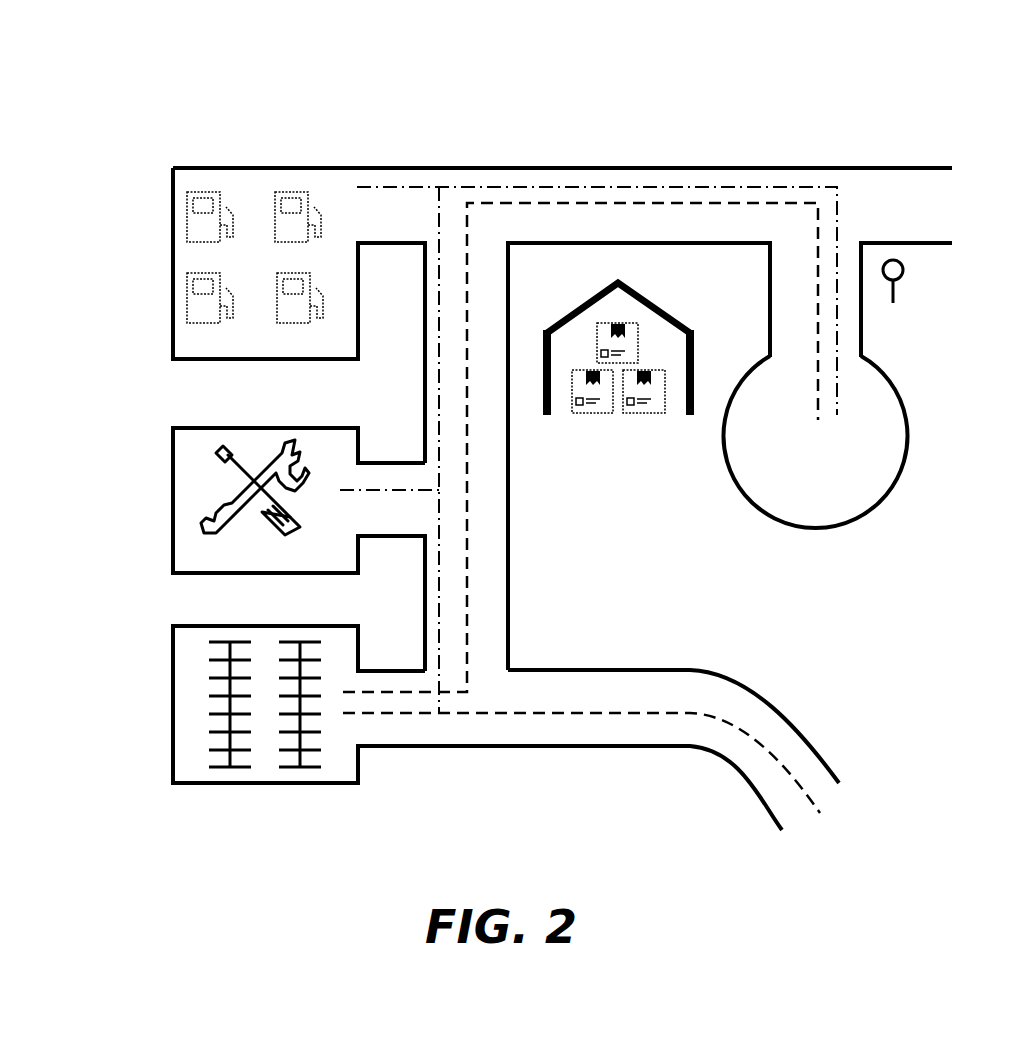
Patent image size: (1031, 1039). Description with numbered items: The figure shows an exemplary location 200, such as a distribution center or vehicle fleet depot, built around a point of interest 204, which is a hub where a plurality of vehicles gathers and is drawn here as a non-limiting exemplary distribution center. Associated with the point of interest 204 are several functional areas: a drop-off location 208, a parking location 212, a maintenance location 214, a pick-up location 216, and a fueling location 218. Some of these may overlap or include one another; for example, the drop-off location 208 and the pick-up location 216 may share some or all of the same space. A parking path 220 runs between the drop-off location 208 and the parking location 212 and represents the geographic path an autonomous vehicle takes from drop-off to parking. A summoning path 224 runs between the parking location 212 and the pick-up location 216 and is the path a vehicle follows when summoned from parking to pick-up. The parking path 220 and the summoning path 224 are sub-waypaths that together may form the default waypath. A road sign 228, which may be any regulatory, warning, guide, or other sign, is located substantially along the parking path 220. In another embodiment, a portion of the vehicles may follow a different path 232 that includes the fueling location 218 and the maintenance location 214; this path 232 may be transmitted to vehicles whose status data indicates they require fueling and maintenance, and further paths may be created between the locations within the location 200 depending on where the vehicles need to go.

The location 200 is at (442, 68).
The point of interest 204 is at (680, 418).
The drop-off location 208 is at (822, 430).
The parking location 212 is at (173, 748).
The maintenance location 214 is at (173, 548).
The pick-up location 216 is at (822, 820).
The fueling location 218 is at (173, 283).
The parking path 220 is at (715, 200).
The summoning path 224 is at (550, 713).
The road sign 228 is at (903, 285).
The path 232 is at (826, 188).